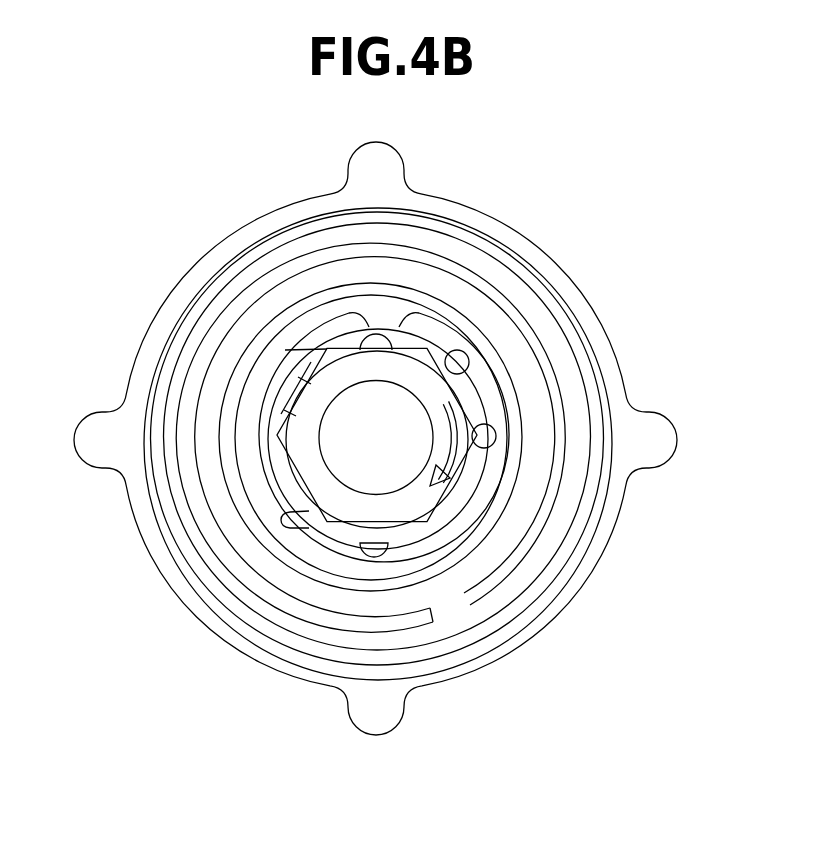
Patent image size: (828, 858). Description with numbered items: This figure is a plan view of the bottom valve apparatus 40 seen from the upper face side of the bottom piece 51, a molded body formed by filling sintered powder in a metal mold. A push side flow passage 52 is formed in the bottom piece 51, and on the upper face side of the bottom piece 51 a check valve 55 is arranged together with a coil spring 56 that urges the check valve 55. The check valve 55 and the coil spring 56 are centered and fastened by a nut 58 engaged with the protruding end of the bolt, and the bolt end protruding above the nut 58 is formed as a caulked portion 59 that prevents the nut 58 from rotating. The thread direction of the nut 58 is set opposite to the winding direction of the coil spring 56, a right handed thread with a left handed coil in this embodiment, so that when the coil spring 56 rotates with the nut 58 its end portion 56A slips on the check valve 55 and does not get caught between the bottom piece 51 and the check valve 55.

The bottom valve apparatus 40 is at (387, 446).
The bottom piece 51 is at (622, 352).
The push side flow passage 52 is at (483, 445).
The check valve 55 is at (500, 613).
The coil spring 56 is at (370, 496).
The end portion of the coil spring 56A is at (433, 615).
The nut 58 is at (317, 479).
The caulked portion 59 is at (358, 472).